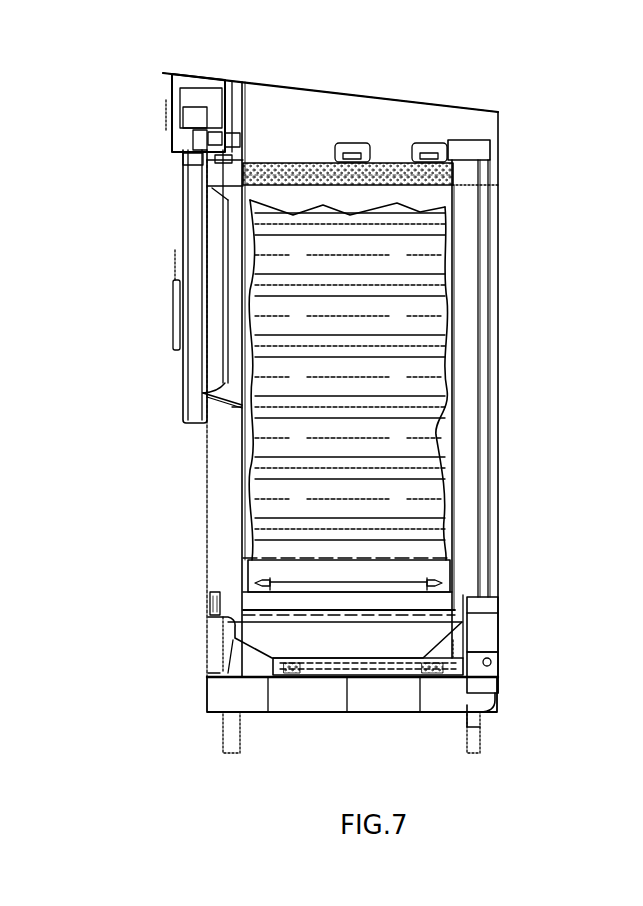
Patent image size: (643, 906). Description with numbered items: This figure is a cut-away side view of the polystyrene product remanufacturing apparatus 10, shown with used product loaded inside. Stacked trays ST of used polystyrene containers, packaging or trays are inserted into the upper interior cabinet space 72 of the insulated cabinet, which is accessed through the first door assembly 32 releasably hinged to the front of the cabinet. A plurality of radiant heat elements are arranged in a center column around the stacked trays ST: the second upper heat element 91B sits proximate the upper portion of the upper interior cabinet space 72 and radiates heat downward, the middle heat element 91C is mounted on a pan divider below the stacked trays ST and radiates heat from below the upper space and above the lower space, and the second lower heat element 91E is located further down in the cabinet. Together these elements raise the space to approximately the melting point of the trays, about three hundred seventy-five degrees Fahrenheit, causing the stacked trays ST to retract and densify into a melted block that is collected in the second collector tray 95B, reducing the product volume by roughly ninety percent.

The polystyrene product remanufacturing apparatus 10 is at (411, 76).
The second upper heat element 91B is at (307, 162).
The first door assembly 32 is at (193, 233).
The upper interior cabinet space 72 is at (305, 397).
The stacked trays ST is at (393, 365).
The middle heat element 91C is at (295, 582).
The second collector tray 95B is at (285, 625).
The second lower heat element 91E is at (363, 677).